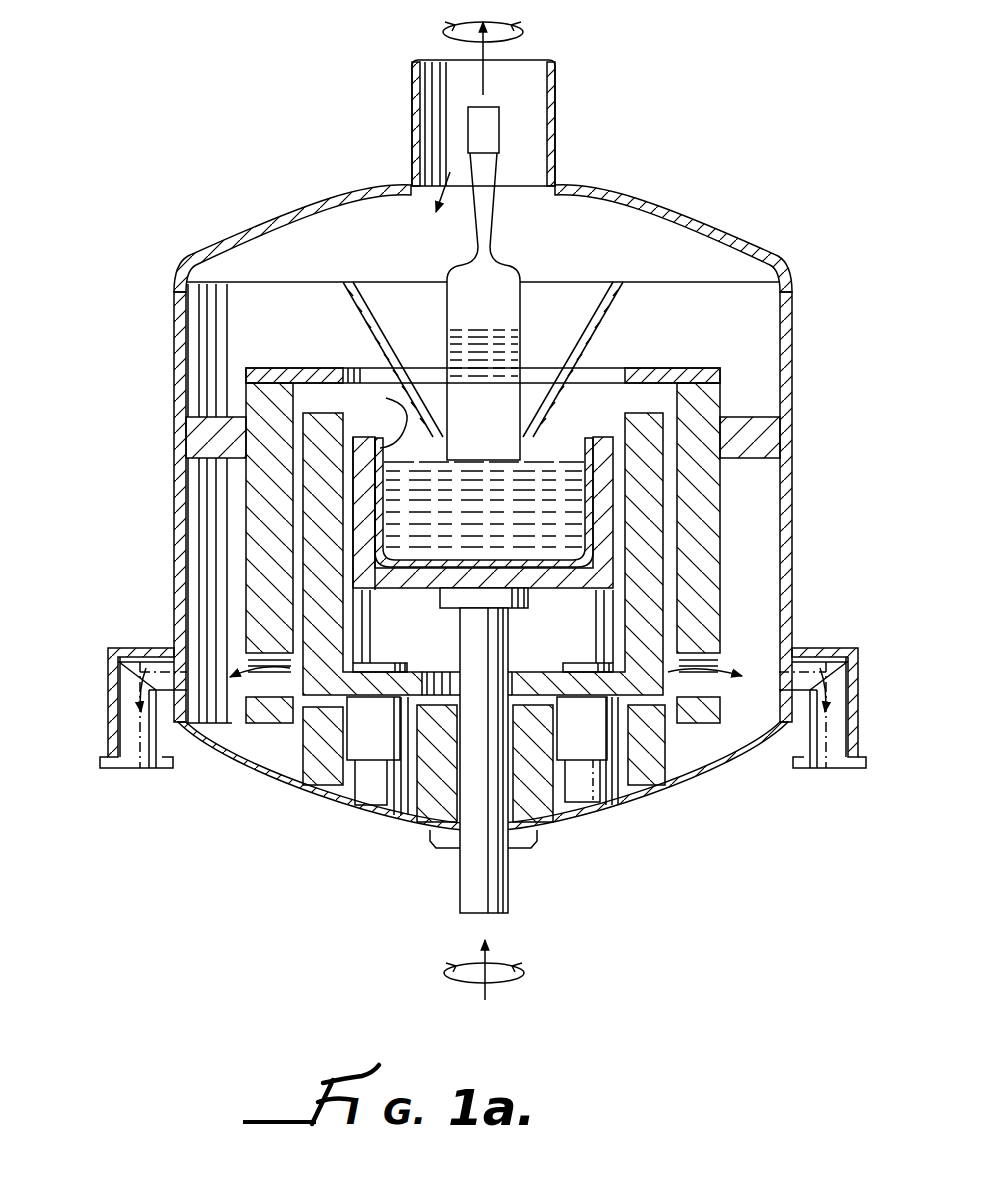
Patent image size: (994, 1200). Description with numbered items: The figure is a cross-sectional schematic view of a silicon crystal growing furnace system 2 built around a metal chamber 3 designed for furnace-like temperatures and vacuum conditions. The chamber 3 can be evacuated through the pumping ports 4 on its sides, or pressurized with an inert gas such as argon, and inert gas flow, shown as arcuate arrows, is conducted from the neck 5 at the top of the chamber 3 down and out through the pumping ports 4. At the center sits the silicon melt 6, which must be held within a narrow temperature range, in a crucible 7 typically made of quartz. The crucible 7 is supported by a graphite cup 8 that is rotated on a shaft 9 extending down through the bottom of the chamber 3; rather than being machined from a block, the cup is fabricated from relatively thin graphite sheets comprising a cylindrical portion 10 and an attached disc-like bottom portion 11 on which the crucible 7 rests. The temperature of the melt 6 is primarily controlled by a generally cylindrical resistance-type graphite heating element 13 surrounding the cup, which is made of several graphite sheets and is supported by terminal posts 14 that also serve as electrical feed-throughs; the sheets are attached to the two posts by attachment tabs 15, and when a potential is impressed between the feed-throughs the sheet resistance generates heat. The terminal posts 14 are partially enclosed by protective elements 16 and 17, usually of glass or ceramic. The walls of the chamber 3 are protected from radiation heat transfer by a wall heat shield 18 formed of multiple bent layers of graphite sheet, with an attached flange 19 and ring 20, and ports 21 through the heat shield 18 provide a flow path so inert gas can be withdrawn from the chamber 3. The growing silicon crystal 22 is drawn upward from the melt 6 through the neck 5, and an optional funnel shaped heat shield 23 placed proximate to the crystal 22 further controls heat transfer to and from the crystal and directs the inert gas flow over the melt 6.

The silicon crystal growing furnace system 2 is at (729, 175).
The chamber 3 is at (236, 232).
The pumping ports 4 is at (102, 772).
The neck 5 is at (557, 74).
The silicon melt 6 is at (548, 466).
The crucible 7 is at (384, 417).
The graphite cup 8 is at (612, 555).
The shaft 9 is at (460, 893).
The cylindrical portion 10 is at (360, 527).
The disc-like bottom portion 11 is at (578, 588).
The heating element 13 is at (662, 530).
The terminal posts 14 is at (350, 752).
The attachment tabs 15 is at (388, 668).
The protective element 16 is at (650, 800).
The protective element 17 is at (370, 742).
The wall heat shield 18 is at (258, 392).
The flange 19 is at (196, 436).
The ring 20 is at (333, 368).
The ports 21 is at (266, 690).
The silicon crystal 22 is at (521, 319).
The funnel shaped heat shield 23 is at (606, 302).